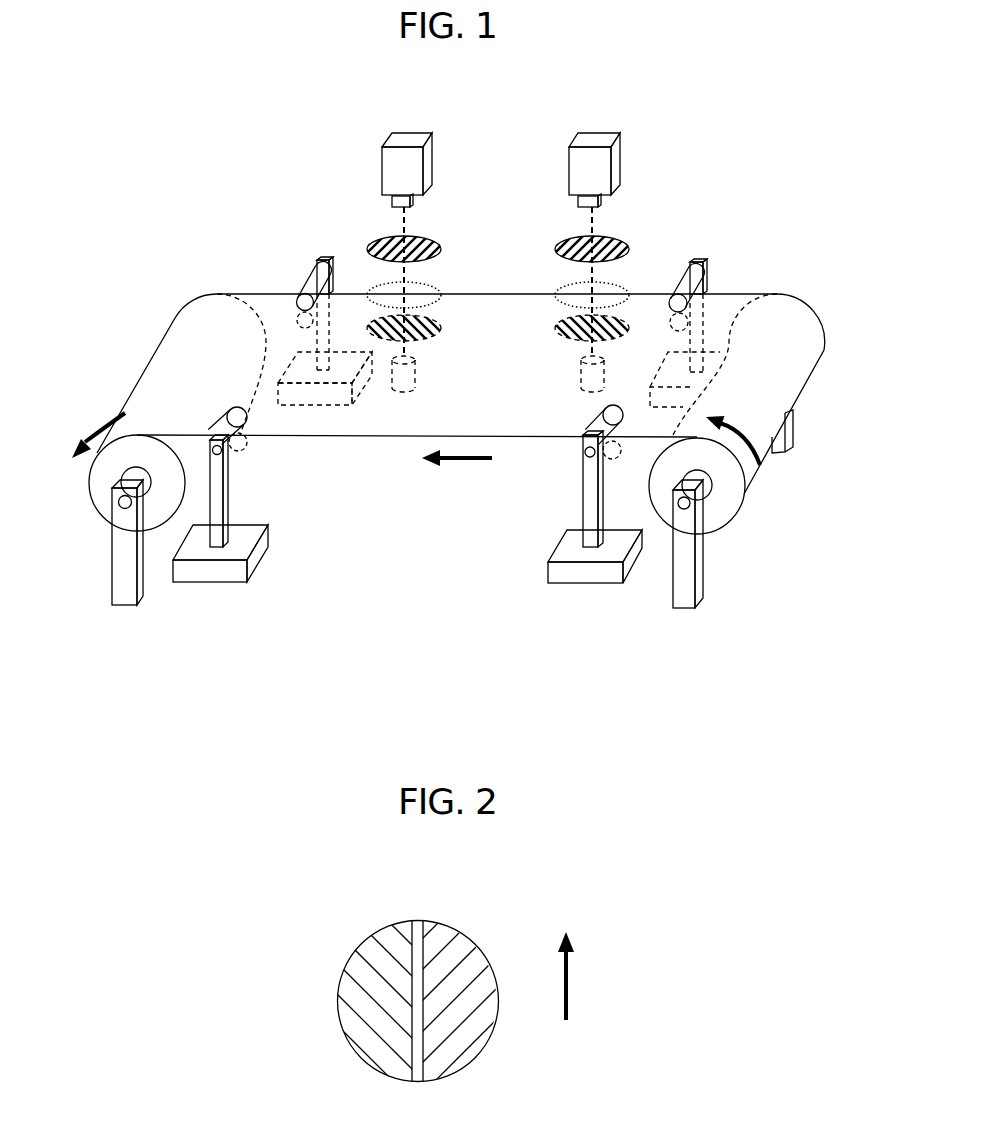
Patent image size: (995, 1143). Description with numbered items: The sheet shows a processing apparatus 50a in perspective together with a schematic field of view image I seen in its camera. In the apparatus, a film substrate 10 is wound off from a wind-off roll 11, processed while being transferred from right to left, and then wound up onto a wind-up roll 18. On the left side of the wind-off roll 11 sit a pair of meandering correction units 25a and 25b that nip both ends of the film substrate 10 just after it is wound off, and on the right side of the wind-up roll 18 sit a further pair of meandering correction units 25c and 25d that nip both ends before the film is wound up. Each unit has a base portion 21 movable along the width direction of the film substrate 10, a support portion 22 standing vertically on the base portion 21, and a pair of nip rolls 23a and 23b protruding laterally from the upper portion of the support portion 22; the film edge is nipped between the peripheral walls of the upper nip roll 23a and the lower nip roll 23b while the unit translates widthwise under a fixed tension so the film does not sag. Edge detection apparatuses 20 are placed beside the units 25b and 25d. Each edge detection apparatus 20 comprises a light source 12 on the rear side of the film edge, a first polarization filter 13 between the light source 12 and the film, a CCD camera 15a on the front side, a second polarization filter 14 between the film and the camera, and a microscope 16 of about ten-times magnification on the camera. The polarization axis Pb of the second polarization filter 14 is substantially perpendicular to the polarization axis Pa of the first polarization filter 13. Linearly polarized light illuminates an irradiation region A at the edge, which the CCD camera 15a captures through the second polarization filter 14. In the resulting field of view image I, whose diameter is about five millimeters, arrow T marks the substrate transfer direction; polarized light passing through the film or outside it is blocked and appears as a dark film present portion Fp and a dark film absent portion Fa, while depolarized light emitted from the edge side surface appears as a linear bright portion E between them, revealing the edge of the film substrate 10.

In FIG. 1, the processing apparatus 50a is at (163, 177).
In FIG. 1, the film substrate 10 is at (378, 422).
In FIG. 1, the wind-off roll 11 is at (738, 522).
In FIG. 1, the wind-up roll 18 is at (92, 523).
In FIG. 1, the edge detection apparatus 20 is at (554, 246).
In FIG. 1, the CCD camera 15a is at (617, 155).
In FIG. 1, the microscope 16 is at (602, 205).
In FIG. 1, the second polarization filter 14 is at (623, 243).
In FIG. 1, the first polarization filter 13 is at (625, 324).
In FIG. 1, the light source 12 is at (605, 375).
In FIG. 1, the irradiation region A is at (565, 290).
In FIG. 1, the polarization axis of the first polarization filter Pa is at (562, 327).
In FIG. 1, the polarization axis of the second polarization filter Pb is at (562, 246).
In FIG. 1, the meandering correction unit 25a is at (532, 507).
In FIG. 1, the meandering correction unit 25b is at (715, 278).
In FIG. 1, the meandering correction unit 25c is at (222, 587).
In FIG. 1, the meandering correction unit 25d is at (295, 282).
In FIG. 1, the base portion 21 is at (553, 570).
In FIG. 1, the support portion 22 is at (593, 505).
In FIG. 1, the upper nip roll 23a is at (603, 420).
In FIG. 1, the lower nip roll 23b is at (612, 440).
In FIG. 2, the field of view image I is at (395, 922).
In FIG. 2, the linear bright portion E is at (417, 1080).
In FIG. 2, the film present portion Fp is at (342, 988).
In FIG. 2, the film absent portion Fa is at (492, 990).
In FIG. 2, the substrate transfer direction T is at (568, 972).